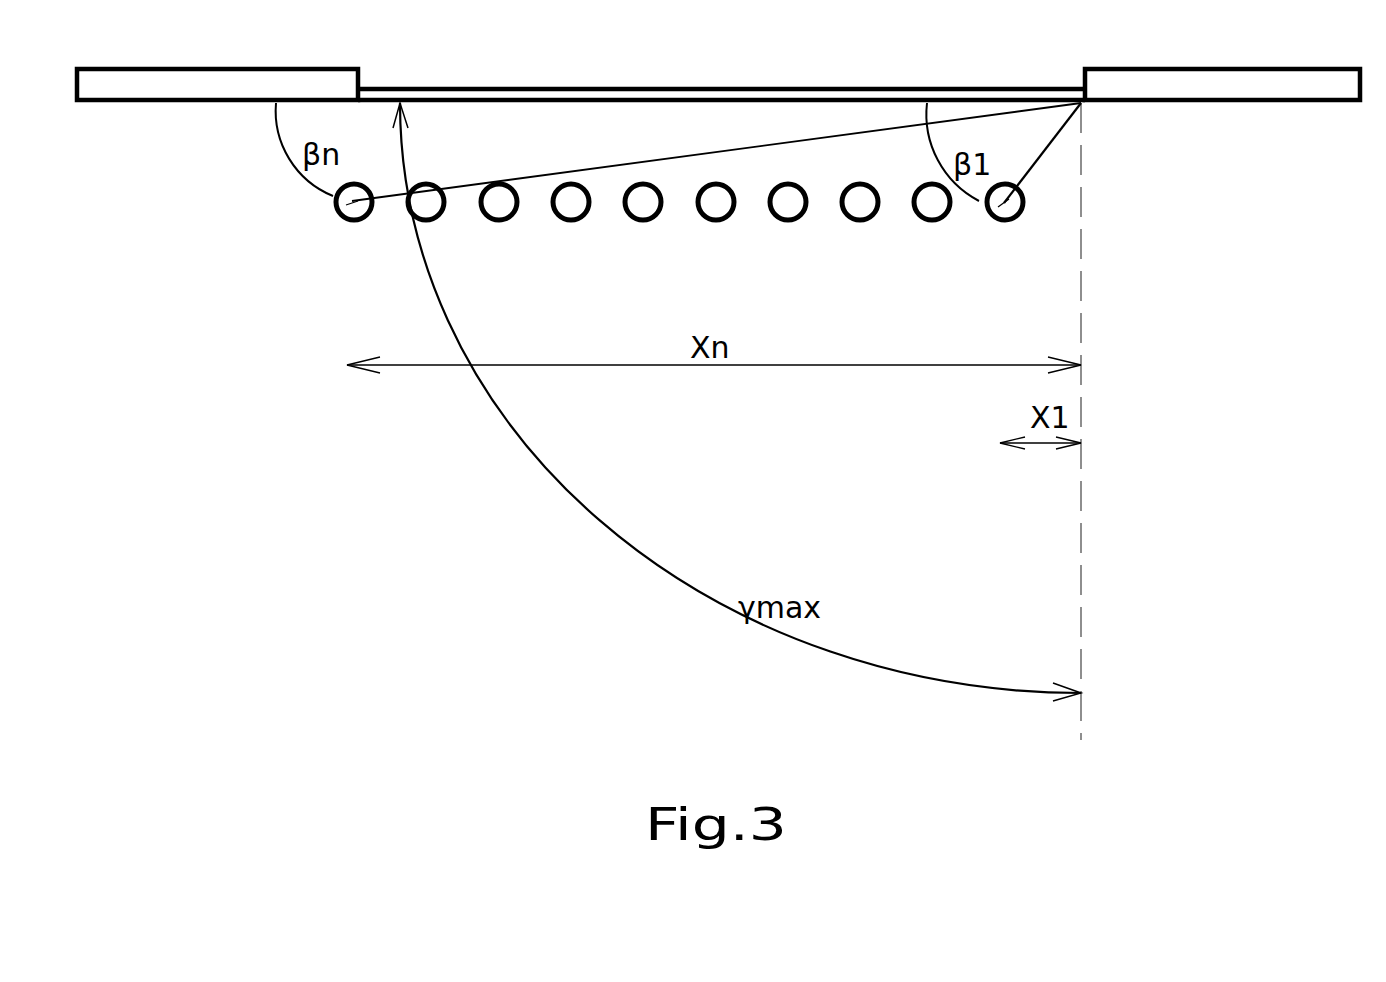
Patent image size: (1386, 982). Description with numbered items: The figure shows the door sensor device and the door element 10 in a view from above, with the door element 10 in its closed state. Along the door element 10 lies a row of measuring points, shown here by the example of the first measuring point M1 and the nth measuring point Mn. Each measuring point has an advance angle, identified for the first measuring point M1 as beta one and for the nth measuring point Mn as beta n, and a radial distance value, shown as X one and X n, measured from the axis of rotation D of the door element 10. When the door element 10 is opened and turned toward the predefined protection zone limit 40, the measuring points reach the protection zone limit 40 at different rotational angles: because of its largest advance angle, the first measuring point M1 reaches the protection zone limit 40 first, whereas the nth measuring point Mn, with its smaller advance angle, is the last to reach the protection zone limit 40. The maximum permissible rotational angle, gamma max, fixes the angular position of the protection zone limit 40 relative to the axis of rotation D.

The door element 10 is at (588, 93).
The protection zone limit 40 is at (1079, 332).
The nth measuring point Mn is at (353, 223).
The first measuring point M1 is at (1005, 225).
The axis of rotation D is at (1083, 105).